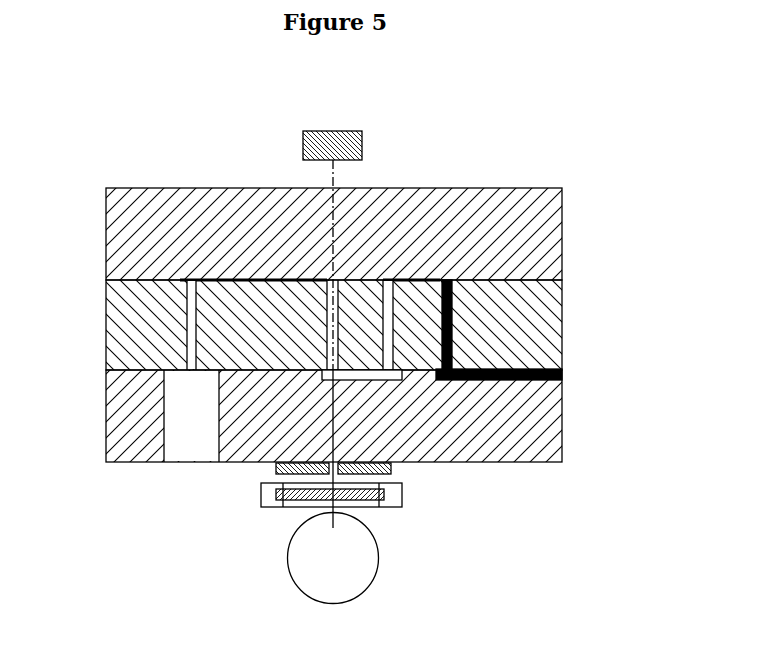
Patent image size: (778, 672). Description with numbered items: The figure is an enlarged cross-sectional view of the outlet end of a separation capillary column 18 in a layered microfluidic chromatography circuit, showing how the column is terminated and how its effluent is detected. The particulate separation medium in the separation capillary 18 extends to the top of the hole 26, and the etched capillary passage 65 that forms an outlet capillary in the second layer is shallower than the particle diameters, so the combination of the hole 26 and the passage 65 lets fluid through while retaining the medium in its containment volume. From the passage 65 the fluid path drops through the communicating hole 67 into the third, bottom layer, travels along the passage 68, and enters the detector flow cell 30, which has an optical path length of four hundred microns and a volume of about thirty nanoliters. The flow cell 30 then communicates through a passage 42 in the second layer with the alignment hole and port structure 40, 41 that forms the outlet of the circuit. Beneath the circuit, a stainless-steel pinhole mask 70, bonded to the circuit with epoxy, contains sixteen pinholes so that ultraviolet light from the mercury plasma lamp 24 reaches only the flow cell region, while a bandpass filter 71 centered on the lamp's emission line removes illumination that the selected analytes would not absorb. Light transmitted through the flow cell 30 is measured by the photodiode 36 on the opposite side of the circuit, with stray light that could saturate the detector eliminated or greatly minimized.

The separation capillary column 18 is at (493, 381).
The mercury plasma lamp 24 is at (288, 575).
The microstructure hole 26 is at (452, 327).
The detector flow cell 30 is at (327, 280).
The photodiode 36 is at (366, 140).
The outlet port 40 is at (192, 447).
The alignment hole 41 is at (190, 323).
The passage 42 is at (252, 279).
The capillary passage 65 is at (425, 277).
The communicating hole 67 is at (390, 366).
The passage 68 is at (365, 377).
The pinhole mask 70 is at (372, 473).
The bandpass filter 71 is at (289, 506).